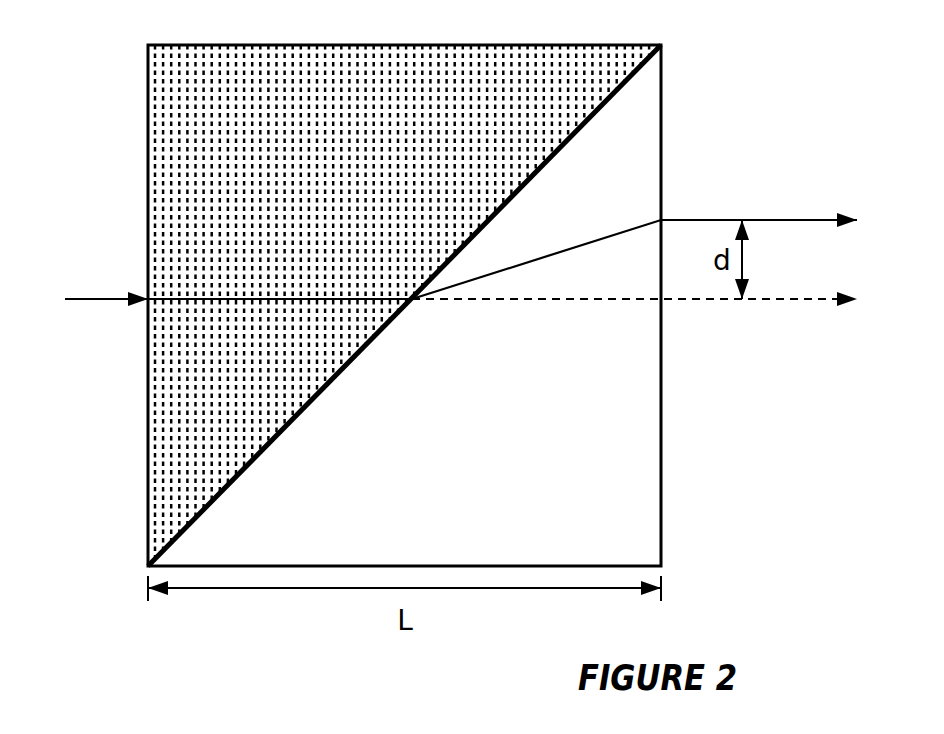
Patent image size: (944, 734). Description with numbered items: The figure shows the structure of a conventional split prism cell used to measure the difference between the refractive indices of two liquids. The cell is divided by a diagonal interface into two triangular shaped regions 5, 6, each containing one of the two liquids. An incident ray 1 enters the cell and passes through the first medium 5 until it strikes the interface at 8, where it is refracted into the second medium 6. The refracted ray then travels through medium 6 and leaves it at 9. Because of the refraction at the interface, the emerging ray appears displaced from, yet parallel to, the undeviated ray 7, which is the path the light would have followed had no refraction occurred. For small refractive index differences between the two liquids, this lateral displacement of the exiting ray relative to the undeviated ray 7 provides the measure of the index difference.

The incident ray 1 is at (93, 298).
The triangular shaped region 5 is at (406, 305).
The triangular shaped region 6 is at (404, 305).
The undeviated ray 7 is at (654, 303).
The interface 8 is at (287, 323).
The exit point 9 is at (634, 240).